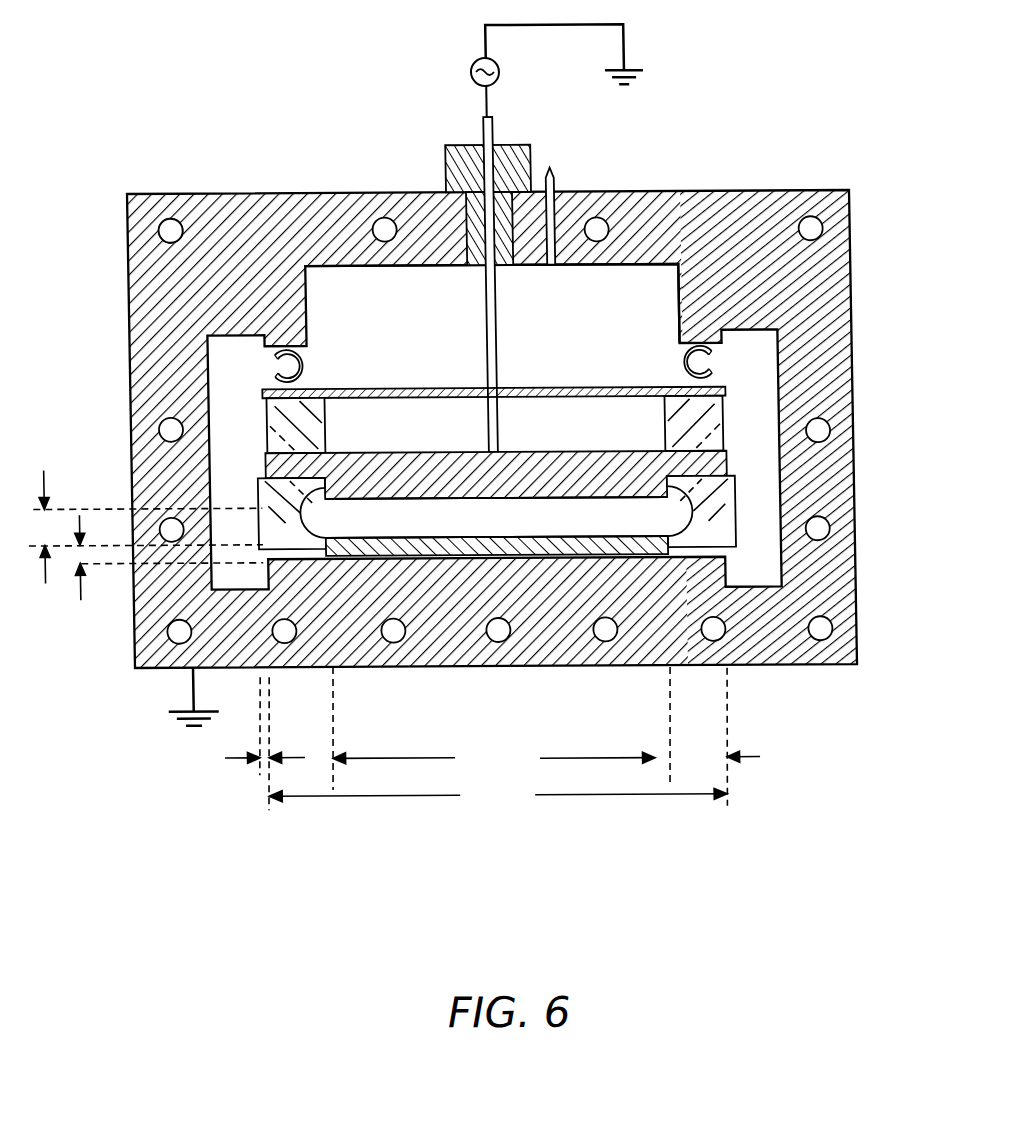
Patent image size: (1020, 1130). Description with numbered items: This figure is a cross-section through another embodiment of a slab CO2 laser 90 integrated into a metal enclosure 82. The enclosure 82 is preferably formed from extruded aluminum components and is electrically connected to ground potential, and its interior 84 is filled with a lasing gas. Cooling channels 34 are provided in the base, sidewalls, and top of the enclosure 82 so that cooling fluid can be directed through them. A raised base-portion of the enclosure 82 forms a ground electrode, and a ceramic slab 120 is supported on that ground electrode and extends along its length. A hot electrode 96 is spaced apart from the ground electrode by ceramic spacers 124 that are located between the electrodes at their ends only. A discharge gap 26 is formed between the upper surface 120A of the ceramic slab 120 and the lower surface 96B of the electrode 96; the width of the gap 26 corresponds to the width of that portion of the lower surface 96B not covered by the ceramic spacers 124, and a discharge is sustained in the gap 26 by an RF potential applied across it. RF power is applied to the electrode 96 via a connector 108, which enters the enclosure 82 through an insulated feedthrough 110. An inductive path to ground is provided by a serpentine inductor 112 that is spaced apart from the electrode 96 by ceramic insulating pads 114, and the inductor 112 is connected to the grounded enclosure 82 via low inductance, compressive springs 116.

The cooling channels 34 is at (177, 218).
The metal enclosure 82 is at (732, 675).
The interior 84 is at (408, 342).
The slab CO2 laser 90 is at (695, 851).
The hot electrode 96 is at (728, 461).
The lower surface of electrode 96B is at (425, 501).
The connector 108 is at (495, 309).
The insulated feedthrough 110 is at (456, 162).
The serpentine inductor 112 is at (400, 387).
The ceramic insulating pads 114 is at (266, 419).
The compressive springs 116 is at (264, 367).
The ceramic slab 120 is at (633, 565).
The upper surface of ceramic slab 120A is at (557, 559).
The ceramic spacers 124 is at (262, 514).
The discharge gap 26 is at (454, 523).